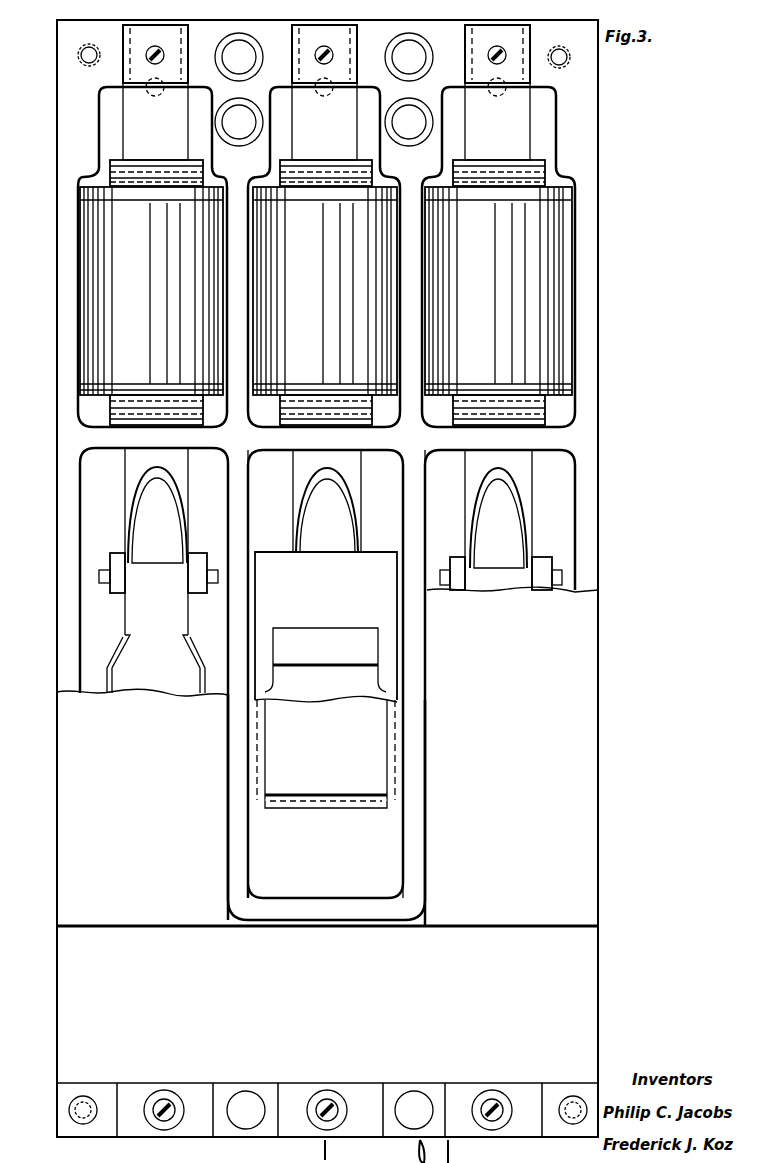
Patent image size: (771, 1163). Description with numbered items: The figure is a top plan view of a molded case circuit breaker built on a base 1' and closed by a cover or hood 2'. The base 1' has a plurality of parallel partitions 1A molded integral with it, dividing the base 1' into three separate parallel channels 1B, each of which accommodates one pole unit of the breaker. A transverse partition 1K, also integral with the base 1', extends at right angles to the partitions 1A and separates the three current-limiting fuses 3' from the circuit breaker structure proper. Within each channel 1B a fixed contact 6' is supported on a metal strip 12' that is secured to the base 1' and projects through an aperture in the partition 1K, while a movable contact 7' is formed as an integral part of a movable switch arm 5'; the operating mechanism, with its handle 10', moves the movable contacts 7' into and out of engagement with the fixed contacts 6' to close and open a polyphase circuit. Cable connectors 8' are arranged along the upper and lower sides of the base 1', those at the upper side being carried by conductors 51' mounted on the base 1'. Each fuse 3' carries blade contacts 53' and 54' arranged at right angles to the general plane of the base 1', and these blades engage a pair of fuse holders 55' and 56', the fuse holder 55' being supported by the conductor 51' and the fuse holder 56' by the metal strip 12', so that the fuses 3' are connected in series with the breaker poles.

The base 1' is at (340, 591).
The parallel partitions 1A is at (432, 508).
The parallel channels 1B is at (603, 552).
The transverse partition 1K is at (606, 428).
The cover 2' is at (432, 807).
The current-limiting fuse 3' is at (351, 257).
The movable switch arm 5' is at (330, 623).
The fixed contact 6' is at (329, 510).
The movable contact 7' is at (345, 523).
The cable connector 8' is at (315, 54).
The handle 10' is at (326, 680).
The metal strip 12' is at (327, 687).
The conductor 51' is at (315, 119).
The blade contact 53' is at (332, 278).
The blade contact 54' is at (331, 416).
The fuse holder 55' is at (327, 164).
The fuse holder 56' is at (327, 420).